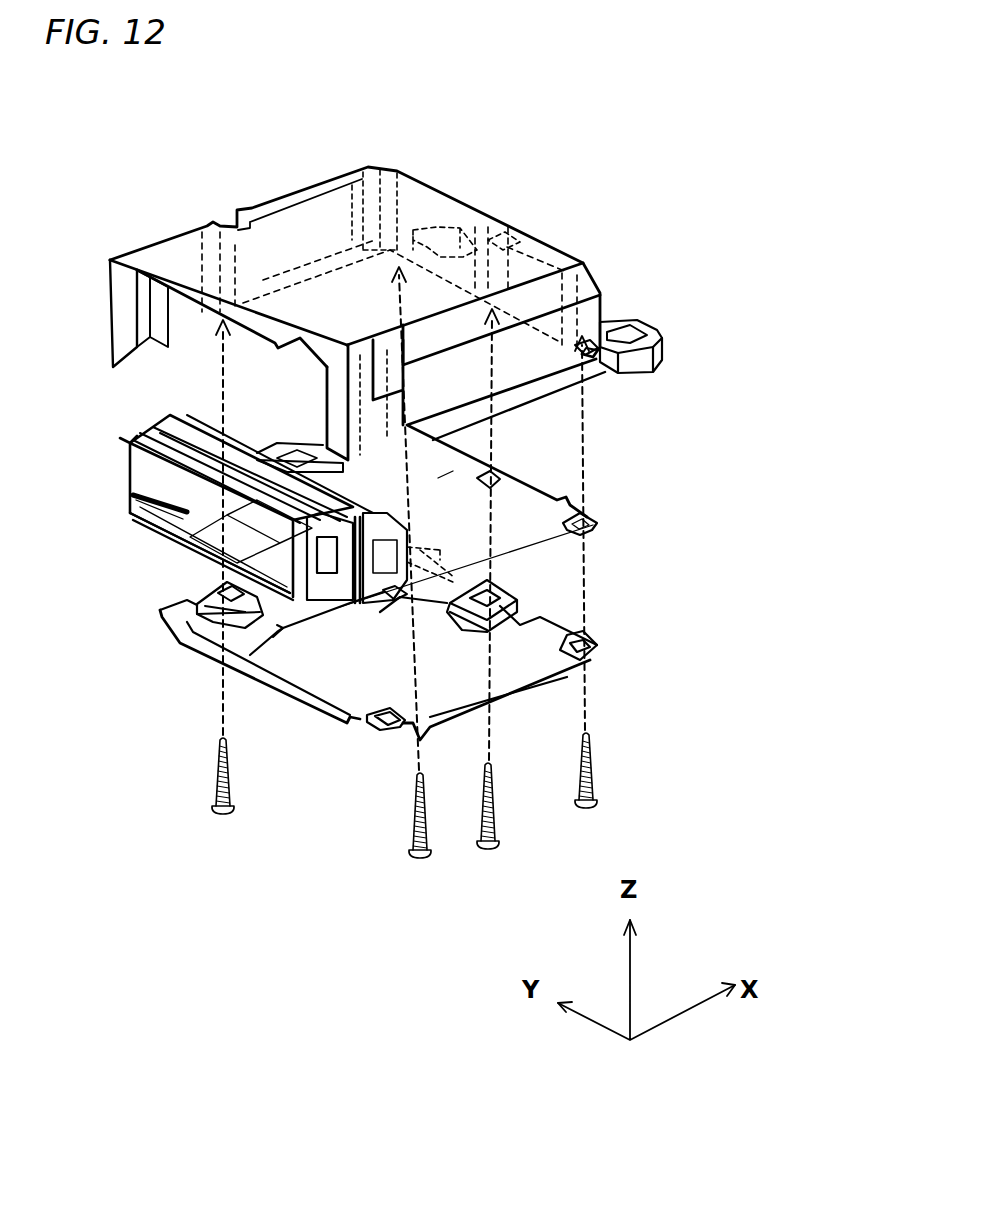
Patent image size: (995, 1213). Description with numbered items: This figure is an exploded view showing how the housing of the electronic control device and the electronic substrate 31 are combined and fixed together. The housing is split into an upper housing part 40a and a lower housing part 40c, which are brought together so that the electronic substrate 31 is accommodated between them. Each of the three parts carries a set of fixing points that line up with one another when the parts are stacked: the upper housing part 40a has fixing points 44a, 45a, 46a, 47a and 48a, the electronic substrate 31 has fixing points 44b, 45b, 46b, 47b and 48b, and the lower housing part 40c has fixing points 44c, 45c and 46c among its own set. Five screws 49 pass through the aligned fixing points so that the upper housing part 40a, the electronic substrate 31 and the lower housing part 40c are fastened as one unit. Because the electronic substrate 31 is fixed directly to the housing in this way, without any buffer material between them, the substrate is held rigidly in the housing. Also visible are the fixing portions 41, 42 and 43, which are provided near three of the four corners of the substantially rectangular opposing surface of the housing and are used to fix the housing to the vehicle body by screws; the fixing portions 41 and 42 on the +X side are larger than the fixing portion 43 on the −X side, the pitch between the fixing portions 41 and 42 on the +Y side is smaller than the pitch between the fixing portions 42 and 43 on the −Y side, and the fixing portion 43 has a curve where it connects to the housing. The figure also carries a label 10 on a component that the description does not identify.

The boss portion 10 is at (215, 600).
The electronic substrate 31 is at (443, 475).
The upper housing part 40a is at (290, 188).
The lower housing part 40c is at (350, 673).
The fixing portion 41 is at (445, 240).
The fixing portion 42 is at (640, 327).
The fixing portion 43 is at (147, 463).
The fixing point of upper housing part 44a is at (385, 189).
The fixing point of electronic substrate 44b is at (407, 425).
The fixing point of lower housing part 44c is at (453, 547).
The fixing point of upper housing part 45a is at (595, 270).
The fixing point of electronic substrate 45b is at (592, 520).
The fixing point of lower housing part 45c is at (600, 640).
The fixing point of upper housing part 46a is at (363, 377).
The fixing point of electronic substrate 46b is at (290, 634).
The fixing point of lower housing part 46c is at (385, 722).
The fixing point of upper housing part 47a is at (228, 248).
The fixing point of electronic substrate 47b is at (130, 509).
The fixing point of upper housing part 48a is at (505, 250).
The fixing point of electronic substrate 48b is at (510, 470).
The screws 49 is at (440, 838).